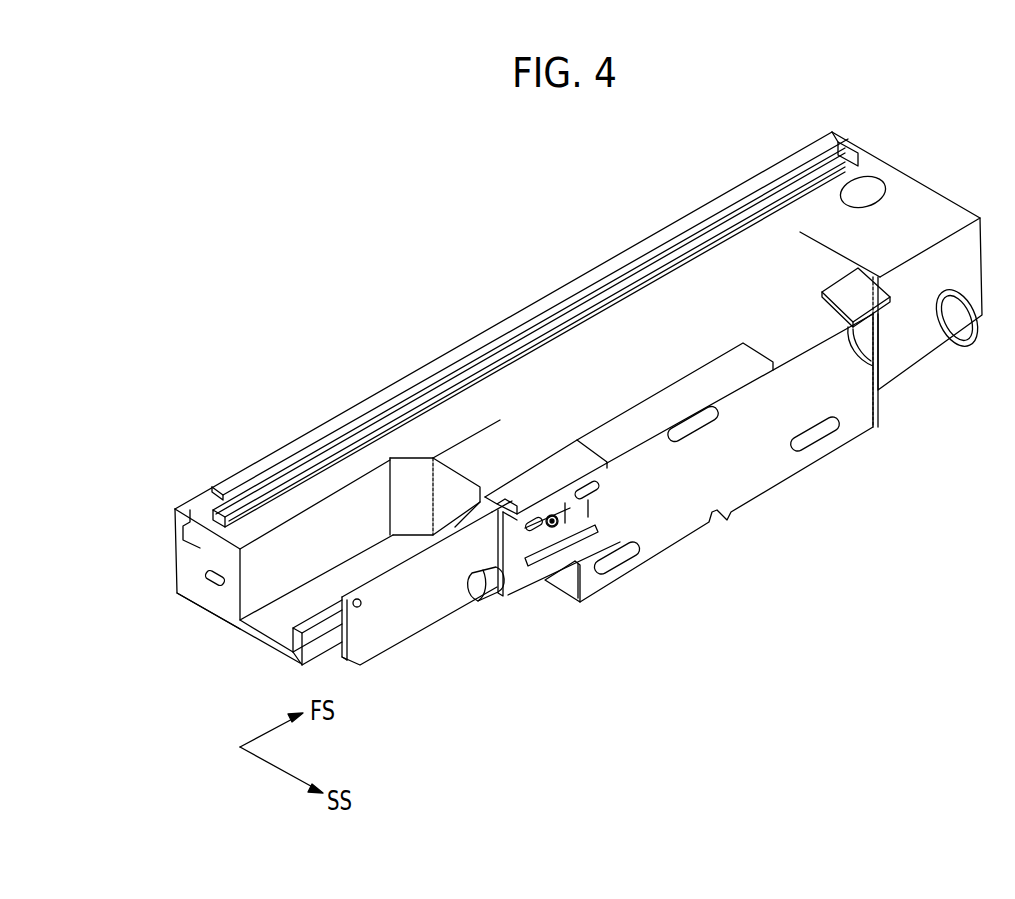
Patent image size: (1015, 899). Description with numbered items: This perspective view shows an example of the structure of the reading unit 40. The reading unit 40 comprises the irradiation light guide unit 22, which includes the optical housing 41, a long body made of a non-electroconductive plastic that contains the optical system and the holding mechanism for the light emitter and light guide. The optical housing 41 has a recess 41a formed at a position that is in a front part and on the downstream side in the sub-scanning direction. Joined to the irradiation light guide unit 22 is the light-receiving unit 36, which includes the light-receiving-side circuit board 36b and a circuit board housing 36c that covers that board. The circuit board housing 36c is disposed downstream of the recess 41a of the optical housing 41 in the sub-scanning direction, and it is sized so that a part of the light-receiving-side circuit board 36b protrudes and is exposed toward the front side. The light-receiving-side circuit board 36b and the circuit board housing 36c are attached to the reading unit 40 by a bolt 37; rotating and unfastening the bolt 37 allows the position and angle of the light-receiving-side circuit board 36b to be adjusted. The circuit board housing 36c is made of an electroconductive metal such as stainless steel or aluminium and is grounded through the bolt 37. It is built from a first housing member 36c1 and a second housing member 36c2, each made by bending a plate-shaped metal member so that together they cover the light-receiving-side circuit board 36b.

The reading unit 40 is at (417, 278).
The optical housing 41 is at (900, 223).
The recess 41a is at (320, 567).
The irradiation light guide unit 22 is at (555, 388).
The light-receiving unit 36 is at (850, 477).
The light-receiving-side circuit board 36b is at (417, 605).
The circuit board housing 36c is at (681, 503).
The first housing member 36c1 is at (663, 522).
The second housing member 36c2 is at (715, 380).
The bolt 37 is at (550, 524).